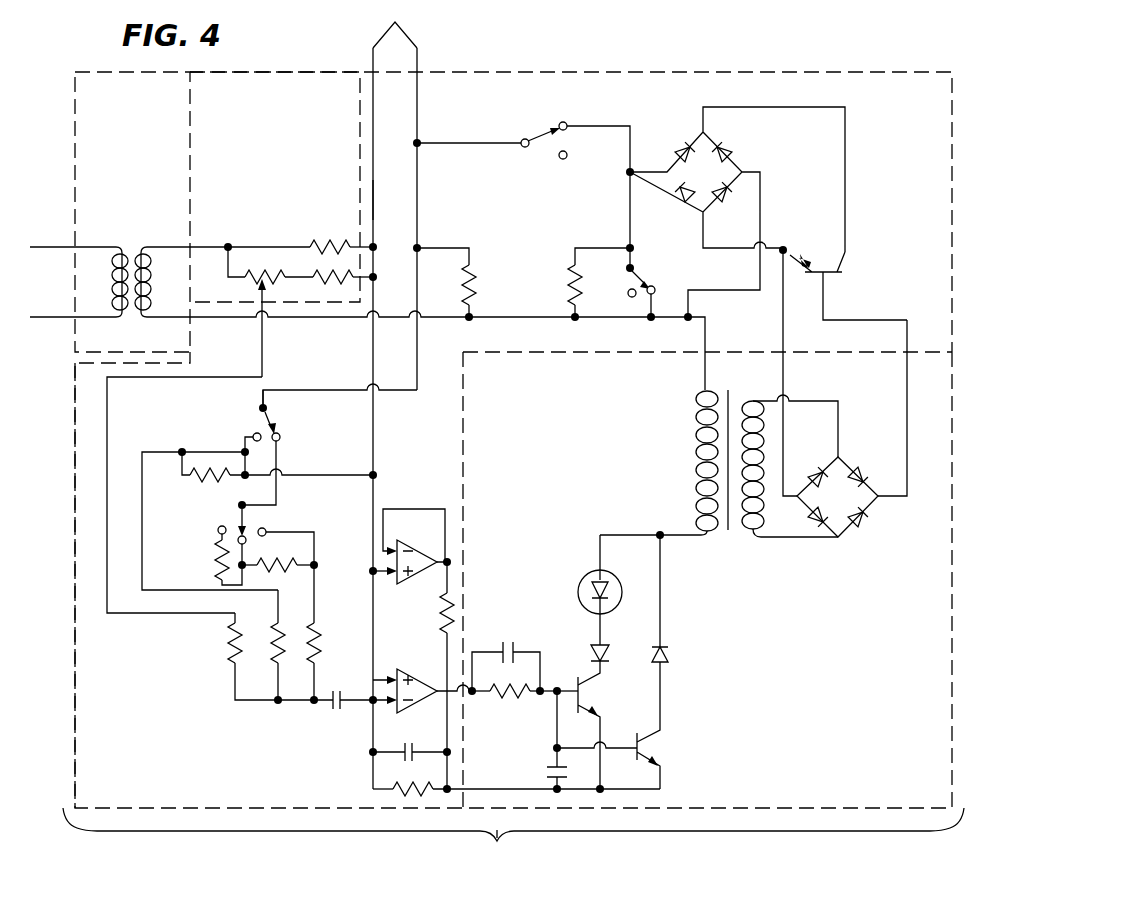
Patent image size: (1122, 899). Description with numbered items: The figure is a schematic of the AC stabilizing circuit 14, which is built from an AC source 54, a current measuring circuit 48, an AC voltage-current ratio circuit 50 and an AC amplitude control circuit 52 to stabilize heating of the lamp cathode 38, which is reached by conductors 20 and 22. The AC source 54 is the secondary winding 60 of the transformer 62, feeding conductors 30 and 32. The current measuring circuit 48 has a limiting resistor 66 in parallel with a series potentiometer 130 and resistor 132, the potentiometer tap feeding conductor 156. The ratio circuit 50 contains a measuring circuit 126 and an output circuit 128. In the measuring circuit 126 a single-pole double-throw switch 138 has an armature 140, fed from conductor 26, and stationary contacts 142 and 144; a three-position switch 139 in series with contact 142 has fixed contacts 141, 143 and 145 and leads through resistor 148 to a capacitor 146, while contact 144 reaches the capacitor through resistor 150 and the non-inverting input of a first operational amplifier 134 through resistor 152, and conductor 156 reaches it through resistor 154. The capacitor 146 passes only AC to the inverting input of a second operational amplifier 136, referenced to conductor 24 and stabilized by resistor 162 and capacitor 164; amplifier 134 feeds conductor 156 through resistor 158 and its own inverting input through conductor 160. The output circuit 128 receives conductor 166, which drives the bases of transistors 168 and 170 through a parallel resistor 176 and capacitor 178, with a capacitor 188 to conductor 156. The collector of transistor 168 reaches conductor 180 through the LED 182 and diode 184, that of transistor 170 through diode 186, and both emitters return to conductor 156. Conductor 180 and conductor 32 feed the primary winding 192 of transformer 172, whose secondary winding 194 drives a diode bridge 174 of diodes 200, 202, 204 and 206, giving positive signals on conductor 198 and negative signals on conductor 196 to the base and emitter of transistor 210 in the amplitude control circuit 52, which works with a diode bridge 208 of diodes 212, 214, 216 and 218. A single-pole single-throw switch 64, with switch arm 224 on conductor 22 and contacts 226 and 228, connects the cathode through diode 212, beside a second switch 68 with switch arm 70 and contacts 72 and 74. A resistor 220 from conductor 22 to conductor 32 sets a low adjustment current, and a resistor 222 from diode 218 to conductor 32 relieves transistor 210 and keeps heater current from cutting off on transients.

The AC stabilizing circuit 14 is at (742, 59).
The conductor 20 is at (372, 130).
The conductor 22 is at (417, 114).
The conductor 24 is at (374, 202).
The conductor 26 is at (415, 390).
The conductor 30 is at (206, 248).
The conductor 32 is at (244, 318).
The cathode 38 is at (415, 36).
The current measuring circuit 48 is at (288, 102).
The AC voltage-current ratio circuit 50 is at (498, 846).
The AC amplitude control circuit 52 is at (926, 110).
The AC source 54 is at (108, 94).
The secondary winding 60 is at (143, 312).
The transformer 62 is at (170, 270).
The single-pole single-throw switch 64 is at (523, 177).
The limiting resistor 66 is at (330, 240).
The single-pole single-throw switch 68 is at (638, 274).
The switch arm 70 is at (638, 268).
The switch contact 72 is at (654, 290).
The switch contact 74 is at (628, 290).
The measuring circuit 126 is at (100, 658).
The output circuit 128 is at (924, 752).
The potentiometer 130 is at (276, 274).
The resistor 132 is at (320, 282).
The first linear operational amplifier 134 is at (428, 576).
The second linear operational amplifier 136 is at (424, 672).
The single-pole double-throw switch 138 is at (265, 441).
The single-pole three position switch 139 is at (240, 543).
The armature 140 is at (268, 410).
The fixed contact 141 is at (268, 534).
The first stationary contact 142 is at (248, 424).
The fixed contact 143 is at (248, 546).
The second stationary contact 144 is at (252, 434).
The fixed contact 145 is at (216, 528).
The capacitor 146 is at (334, 706).
The resistor 148 is at (318, 626).
The resistor 150 is at (274, 628).
The resistor 152 is at (204, 484).
The resistor 154 is at (230, 642).
The conductor 156 is at (267, 352).
The resistor 158 is at (450, 620).
The conductor 160 is at (458, 532).
The resistor 162 is at (396, 788).
The capacitor 164 is at (412, 750).
The conductor 166 is at (468, 698).
The first transistor 168 is at (566, 680).
The second transistor 170 is at (654, 748).
The transformer 172 is at (719, 466).
The diode bridge circuit 174 is at (844, 496).
The resistor 176 is at (510, 698).
The capacitor 178 is at (508, 644).
The conductor 180 is at (664, 532).
The LED 182 is at (580, 570).
The diode 184 is at (606, 654).
The diode 186 is at (674, 652).
The capacitor 188 is at (546, 772).
The primary winding 192 is at (696, 396).
The secondary winding 194 is at (770, 390).
The first conductor 196 is at (782, 300).
The second conductor 198 is at (906, 388).
The diode 200 is at (850, 540).
The diode 202 is at (872, 466).
The diode 204 is at (811, 518).
The diode 206 is at (824, 468).
The diode bridge circuit 208 is at (737, 212).
The transistor 210 is at (848, 266).
The diode 212 is at (684, 146).
The diode 214 is at (726, 146).
The diode 216 is at (724, 202).
The diode 218 is at (678, 202).
The resistor 220 is at (478, 272).
The resistor 222 is at (560, 290).
The switch arm 224 is at (526, 138).
The first contact 226 is at (566, 124).
The second contact 228 is at (567, 155).